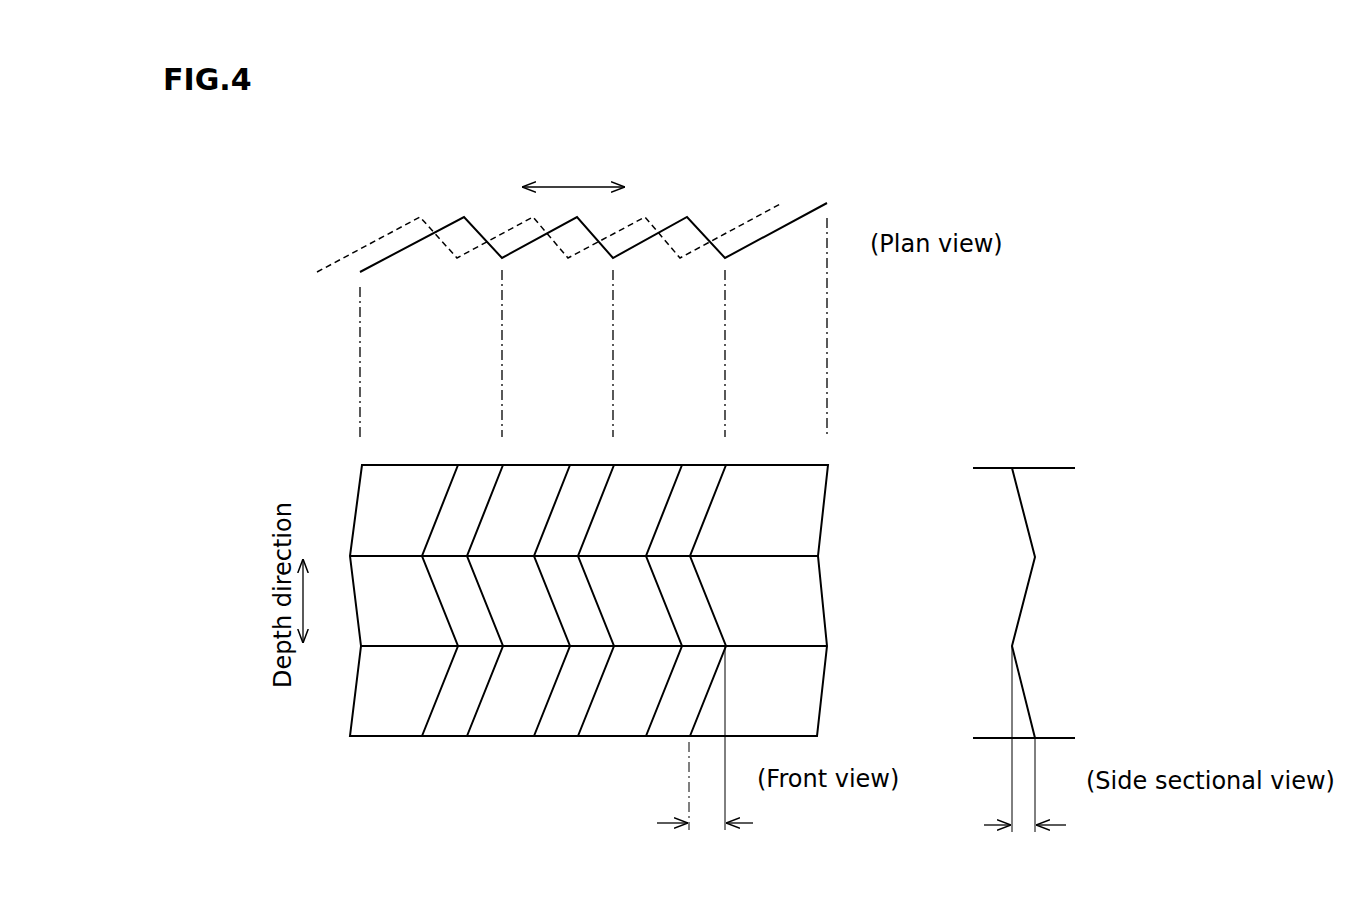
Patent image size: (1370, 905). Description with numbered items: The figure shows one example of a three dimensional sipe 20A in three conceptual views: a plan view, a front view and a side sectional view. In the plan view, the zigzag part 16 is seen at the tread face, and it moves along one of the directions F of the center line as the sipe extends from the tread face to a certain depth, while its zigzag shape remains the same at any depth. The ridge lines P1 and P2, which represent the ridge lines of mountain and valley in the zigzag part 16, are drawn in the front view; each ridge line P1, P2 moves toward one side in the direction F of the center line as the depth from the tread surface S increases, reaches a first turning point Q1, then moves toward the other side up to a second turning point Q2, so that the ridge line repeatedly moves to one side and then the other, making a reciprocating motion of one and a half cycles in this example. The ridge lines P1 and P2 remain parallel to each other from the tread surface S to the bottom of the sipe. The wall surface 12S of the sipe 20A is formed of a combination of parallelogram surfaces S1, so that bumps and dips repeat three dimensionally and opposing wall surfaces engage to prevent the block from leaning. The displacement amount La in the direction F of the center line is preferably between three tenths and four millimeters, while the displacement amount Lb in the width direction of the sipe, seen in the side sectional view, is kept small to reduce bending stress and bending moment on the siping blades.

The three dimensional sipe 20A is at (392, 252).
The zigzag part 16 is at (540, 234).
The wall surface 12S is at (377, 502).
The ridge line P1 is at (725, 256).
The ridge line P2 is at (699, 208).
The parallelogram surface S1 is at (644, 480).
The tread surface S is at (792, 465).
The first turning point Q1 is at (699, 563).
The second turning point Q2 is at (733, 657).
The displacement amount in the center line direction La is at (707, 826).
The displacement amount in the sipe width direction Lb is at (1023, 828).
The direction of the center line F is at (573, 184).